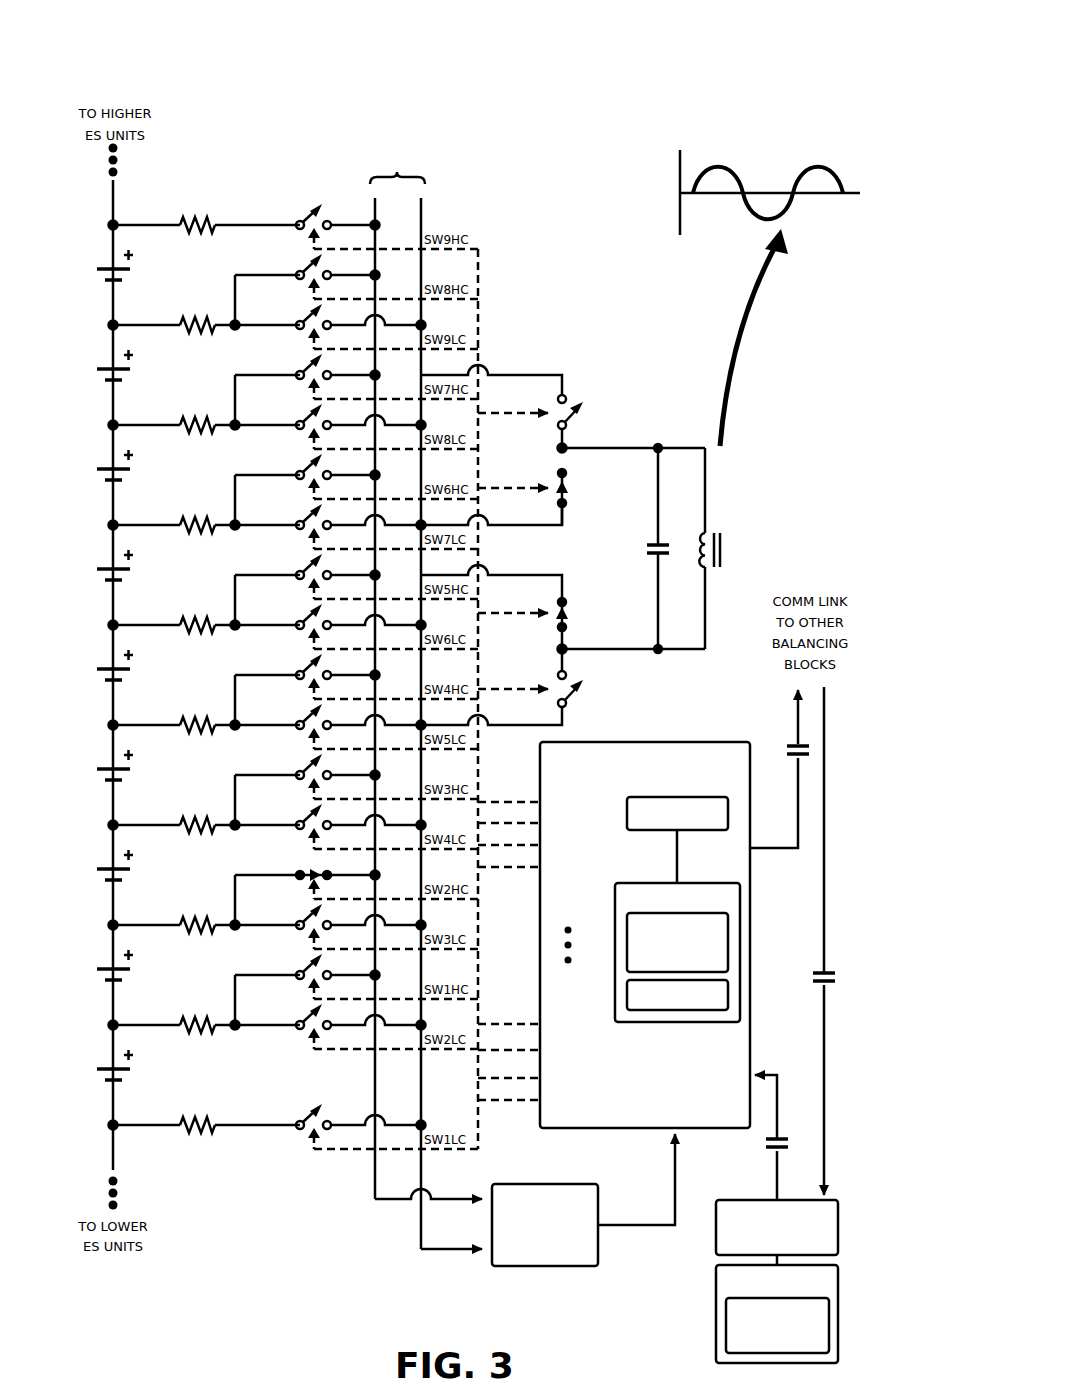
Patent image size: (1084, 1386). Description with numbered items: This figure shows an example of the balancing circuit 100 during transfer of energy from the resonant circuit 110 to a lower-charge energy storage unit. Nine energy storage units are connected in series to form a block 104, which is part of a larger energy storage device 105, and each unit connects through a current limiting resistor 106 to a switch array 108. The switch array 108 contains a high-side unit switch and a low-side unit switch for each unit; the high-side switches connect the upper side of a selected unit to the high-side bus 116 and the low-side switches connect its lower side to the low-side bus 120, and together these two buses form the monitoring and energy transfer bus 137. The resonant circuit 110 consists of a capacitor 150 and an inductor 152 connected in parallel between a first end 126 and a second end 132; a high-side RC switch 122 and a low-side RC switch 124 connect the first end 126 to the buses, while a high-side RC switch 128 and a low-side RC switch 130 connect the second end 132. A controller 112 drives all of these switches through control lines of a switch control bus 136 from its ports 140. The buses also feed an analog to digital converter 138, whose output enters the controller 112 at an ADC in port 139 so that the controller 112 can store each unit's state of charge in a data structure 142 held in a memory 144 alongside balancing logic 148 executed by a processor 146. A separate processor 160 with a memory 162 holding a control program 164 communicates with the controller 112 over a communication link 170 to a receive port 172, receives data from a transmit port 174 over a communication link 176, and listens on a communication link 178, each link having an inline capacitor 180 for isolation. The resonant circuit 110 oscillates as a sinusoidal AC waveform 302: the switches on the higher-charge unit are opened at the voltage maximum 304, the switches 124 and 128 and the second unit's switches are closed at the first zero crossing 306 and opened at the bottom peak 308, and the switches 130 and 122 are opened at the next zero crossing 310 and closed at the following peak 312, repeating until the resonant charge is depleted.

The balancing circuit 100 is at (52, 25).
The block of energy storage units 104 is at (155, 157).
The energy storage device 105 is at (197, 73).
The resistors 106 is at (199, 253).
The switch array 108 is at (278, 131).
The resonant LC circuit 110 is at (750, 440).
The controller 112 is at (645, 935).
The high-side bus 116 is at (388, 1203).
The low-side bus 120 is at (438, 1254).
The high-side SW11H RC switch 122 is at (578, 392).
The low-side SW11L RC switch 124 is at (550, 470).
The first end of resonant circuit 126 is at (664, 440).
The high-side SW10H RC switch 128 is at (578, 592).
The low-side SW10L RC switch 130 is at (550, 672).
The second end of resonant circuit 132 is at (656, 662).
The switch control bus 136 is at (480, 276).
The monitoring and energy transfer bus 137 is at (398, 174).
The analog to digital converter 138 is at (545, 1225).
The ADC in port 139 is at (658, 1143).
The ports 140 is at (511, 770).
The data structure 142 is at (677, 995).
The memory 144 is at (677, 952).
The processor 146 is at (677, 813).
The balancing logic 148 is at (677, 942).
The capacitor CT 150 is at (643, 540).
The inductor LT 152 is at (726, 528).
The processor 160 is at (777, 1227).
The memory 162 is at (777, 1314).
The control program 164 is at (777, 1325).
The communication link 170 is at (770, 1075).
The receive port 172 is at (765, 1038).
The transmit port 174 is at (745, 862).
The communication link 176 is at (797, 712).
The communication link 178 is at (826, 1015).
The inline capacitor 180 is at (792, 745).
The sinusoidal AC current and voltage 302 is at (822, 130).
The voltage maximum 304 is at (695, 145).
The first zero crossing event 306 is at (717, 212).
The bottom peak 308 is at (739, 239).
The next zero crossing event 310 is at (768, 170).
The voltage peak 312 is at (793, 145).